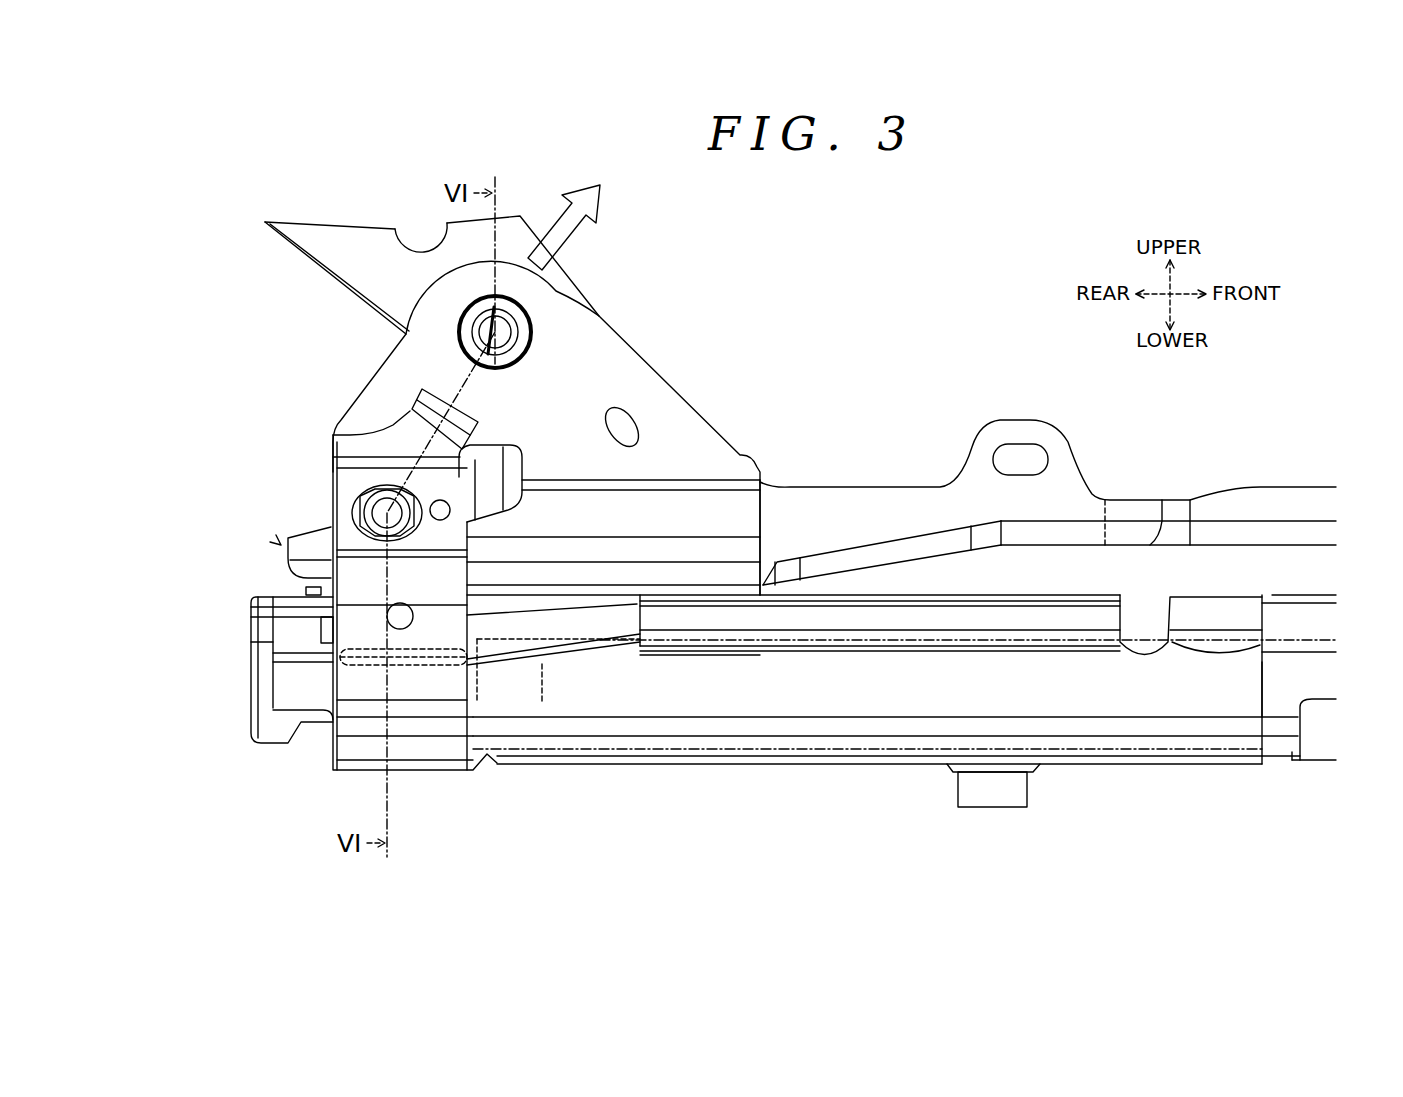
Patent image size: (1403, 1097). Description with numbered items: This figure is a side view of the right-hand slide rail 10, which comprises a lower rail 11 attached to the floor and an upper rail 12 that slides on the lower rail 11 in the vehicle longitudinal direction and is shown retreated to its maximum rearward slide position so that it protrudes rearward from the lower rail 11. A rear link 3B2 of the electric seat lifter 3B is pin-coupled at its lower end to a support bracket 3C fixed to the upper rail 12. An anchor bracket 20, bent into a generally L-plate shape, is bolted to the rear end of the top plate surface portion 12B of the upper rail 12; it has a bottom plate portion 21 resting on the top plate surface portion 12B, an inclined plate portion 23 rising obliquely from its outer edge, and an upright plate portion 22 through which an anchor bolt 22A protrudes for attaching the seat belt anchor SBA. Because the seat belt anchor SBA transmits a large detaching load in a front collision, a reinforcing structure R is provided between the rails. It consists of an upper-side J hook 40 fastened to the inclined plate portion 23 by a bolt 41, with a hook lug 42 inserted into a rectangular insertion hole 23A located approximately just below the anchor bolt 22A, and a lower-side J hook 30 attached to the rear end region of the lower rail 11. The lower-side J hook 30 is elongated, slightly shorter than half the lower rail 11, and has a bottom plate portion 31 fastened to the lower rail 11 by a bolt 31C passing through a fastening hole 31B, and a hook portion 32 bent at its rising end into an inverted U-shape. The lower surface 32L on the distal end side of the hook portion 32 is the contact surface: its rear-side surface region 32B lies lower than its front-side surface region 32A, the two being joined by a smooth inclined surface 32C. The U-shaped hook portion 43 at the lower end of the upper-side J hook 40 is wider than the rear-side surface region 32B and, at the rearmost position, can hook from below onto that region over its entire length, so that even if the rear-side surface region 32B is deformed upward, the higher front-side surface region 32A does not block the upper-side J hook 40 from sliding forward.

The rear link 3B2 is at (397, 270).
The electric seat lifter 3B is at (372, 279).
The anchor bolt 22A is at (503, 328).
The seat belt anchor SBA is at (604, 315).
The anchor bracket 20 is at (623, 357).
The upright plate portion 22 is at (653, 397).
The inclined plate portion 23 is at (670, 507).
The bottom plate portion 21 is at (712, 590).
The support bracket 3C is at (851, 508).
The upper-side J hook 40 is at (362, 447).
The hook lug 42 is at (497, 465).
The insertion hole 23A is at (527, 463).
The reinforcing structure R is at (280, 542).
The bolt 41 is at (350, 510).
The upper rail 12 is at (290, 603).
The top plate surface portion 12B is at (1010, 590).
The lower surface 32L is at (528, 729).
The rear-side surface region 32B is at (372, 690).
The inclined surface 32C is at (540, 657).
The front-side surface region 32A is at (738, 650).
The hook portion 43 is at (423, 690).
The lower-side J hook 30 is at (653, 723).
The hook portion 32 is at (850, 620).
The fastening hole 31B is at (977, 770).
The bottom plate portion 31 is at (873, 767).
The bolt 31C is at (997, 792).
The lower rail 11 is at (1278, 692).
The slide rail 10 is at (1273, 752).